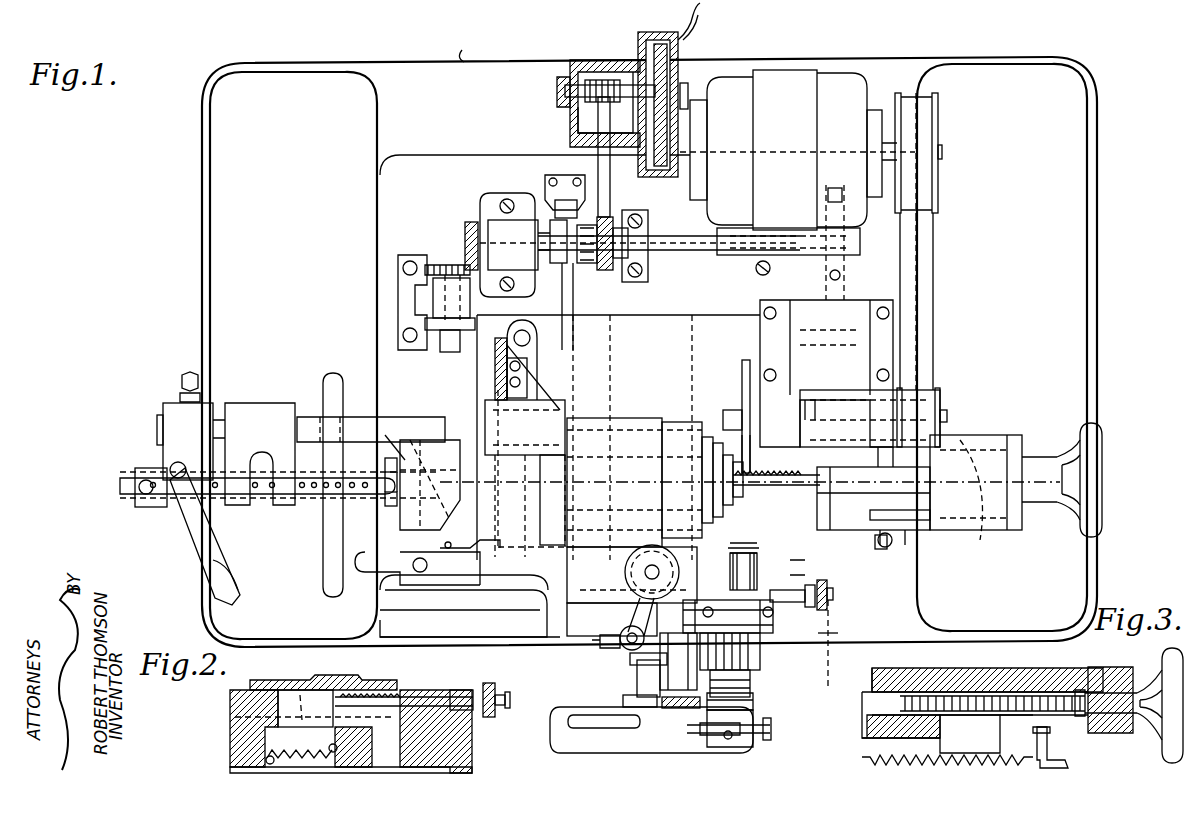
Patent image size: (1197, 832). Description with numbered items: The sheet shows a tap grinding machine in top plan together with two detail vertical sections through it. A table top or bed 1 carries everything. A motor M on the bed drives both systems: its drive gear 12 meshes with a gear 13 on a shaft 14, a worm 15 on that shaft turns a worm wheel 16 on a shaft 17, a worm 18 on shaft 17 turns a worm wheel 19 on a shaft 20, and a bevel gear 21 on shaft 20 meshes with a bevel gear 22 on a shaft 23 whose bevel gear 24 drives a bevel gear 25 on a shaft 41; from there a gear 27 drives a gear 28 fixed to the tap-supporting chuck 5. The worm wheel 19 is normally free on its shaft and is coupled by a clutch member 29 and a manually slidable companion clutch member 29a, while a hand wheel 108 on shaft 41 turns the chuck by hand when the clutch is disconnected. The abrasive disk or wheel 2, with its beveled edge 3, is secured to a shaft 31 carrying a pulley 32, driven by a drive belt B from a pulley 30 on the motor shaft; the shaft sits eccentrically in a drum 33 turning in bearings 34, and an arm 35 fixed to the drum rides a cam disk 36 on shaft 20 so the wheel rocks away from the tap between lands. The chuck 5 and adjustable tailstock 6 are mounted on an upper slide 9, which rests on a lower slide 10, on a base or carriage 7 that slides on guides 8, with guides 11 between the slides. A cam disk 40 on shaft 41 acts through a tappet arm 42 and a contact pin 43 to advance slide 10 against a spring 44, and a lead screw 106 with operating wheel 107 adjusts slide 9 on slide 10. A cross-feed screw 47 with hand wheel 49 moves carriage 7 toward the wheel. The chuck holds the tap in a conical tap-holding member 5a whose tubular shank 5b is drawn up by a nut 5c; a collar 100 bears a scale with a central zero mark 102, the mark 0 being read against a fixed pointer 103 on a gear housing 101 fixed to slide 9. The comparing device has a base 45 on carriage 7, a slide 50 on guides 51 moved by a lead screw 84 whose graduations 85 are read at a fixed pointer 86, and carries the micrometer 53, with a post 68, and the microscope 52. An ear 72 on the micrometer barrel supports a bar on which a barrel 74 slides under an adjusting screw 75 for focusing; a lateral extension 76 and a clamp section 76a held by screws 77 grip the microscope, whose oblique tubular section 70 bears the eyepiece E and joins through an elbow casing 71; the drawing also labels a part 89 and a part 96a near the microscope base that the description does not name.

In FIG. 1, the table top or bed 1 is at (778, 505).
In FIG. 3, the table top or bed 1 is at (862, 745).
In FIG. 1, the abrasive disk or wheel 2 is at (742, 372).
In FIG. 1, the beveled edge 3 is at (745, 385).
In FIG. 1, the tap-supporting chuck 5 is at (680, 425).
In FIG. 1, the conical tap-holding member 5a is at (728, 470).
In FIG. 1, the tubular shank 5b is at (385, 462).
In FIG. 1, the nut 5c is at (398, 440).
In FIG. 1, the adjustable tailstock 6 is at (873, 508).
In FIG. 1, the base or carriage 7 is at (650, 322).
In FIG. 2, the base or carriage 7 is at (240, 768).
In FIG. 3, the base or carriage 7 is at (862, 726).
In FIG. 1, the guides 8 is at (615, 328).
In FIG. 1, the upper slide 9 is at (965, 445).
In FIG. 3, the upper slide 9 is at (945, 670).
In FIG. 3, the lower slide 10 is at (895, 680).
In FIG. 1, the guides 11 is at (982, 497).
In FIG. 1, the drive gear 12 is at (663, 177).
In FIG. 1, the gear 13 is at (660, 40).
In FIG. 1, the shaft 14 is at (636, 90).
In FIG. 1, the worm 15 is at (590, 80).
In FIG. 1, the worm wheel 16 is at (578, 110).
In FIG. 1, the shaft 17 is at (598, 160).
In FIG. 1, the worm 18 is at (628, 240).
In FIG. 1, the worm wheel 19 is at (590, 265).
In FIG. 1, the shaft 20 is at (685, 245).
In FIG. 1, the bevel gear 21 is at (470, 222).
In FIG. 1, the bevel gear 22 is at (446, 263).
In FIG. 1, the shaft 23 is at (435, 352).
In FIG. 1, the bevel gear 24 is at (430, 485).
In FIG. 1, the bevel gear 25 is at (459, 544).
In FIG. 1, the gear 27 is at (497, 345).
In FIG. 1, the gear 28 is at (482, 465).
In FIG. 1, the clutch member 29 is at (590, 268).
In FIG. 1, the companion clutch member 29a is at (560, 215).
In FIG. 1, the pulley 30 is at (940, 130).
In FIG. 1, the shaft 31 is at (893, 410).
In FIG. 1, the pulley 32 is at (942, 400).
In FIG. 1, the drum 33 is at (810, 365).
In FIG. 1, the bearings 34 is at (810, 392).
In FIG. 1, the arm 35 is at (838, 330).
In FIG. 1, the cam disk 36 is at (845, 275).
In FIG. 1, the cam disk 40 is at (531, 468).
In FIG. 1, the shaft 41 is at (395, 520).
In FIG. 1, the link 42 is at (535, 372).
In FIG. 1, the tappet arm / contact pin 43 is at (550, 487).
In FIG. 3, the spring 44 is at (1070, 756).
In FIG. 2, the base 45 is at (232, 722).
In FIG. 1, the cross-feed screw 47 is at (760, 575).
In FIG. 1, the hand wheel 49 is at (560, 745).
In FIG. 1, the slide 50 is at (826, 645).
In FIG. 2, the slide 50 is at (395, 690).
In FIG. 2, the guides 51 is at (305, 706).
In FIG. 1, the microscope 52 is at (750, 680).
In FIG. 1, the micrometer 53 is at (645, 545).
In FIG. 1, the post 68 is at (620, 645).
In FIG. 1, the oblique tubular section 70 is at (753, 702).
In FIG. 1, the elbow casing 71 is at (760, 652).
In FIG. 1, the ear 72 is at (682, 555).
In FIG. 1, the barrel 74 is at (640, 710).
In FIG. 1, the adjusting screw 75 is at (680, 710).
In FIG. 1, the lateral extension 76 is at (722, 590).
In FIG. 1, the clamp section 76a is at (728, 611).
In FIG. 1, the screws 77 is at (690, 633).
In FIG. 1, the lead screw 84 is at (812, 585).
In FIG. 2, the lead screw 84 is at (452, 690).
In FIG. 1, the graduations 85 is at (817, 598).
In FIG. 2, the graduations 85 is at (505, 695).
In FIG. 1, the fixed pointer 86 is at (814, 614).
In FIG. 1, the rod 89 is at (746, 723).
In FIG. 1, the knob 96a is at (768, 738).
In FIG. 1, the collar 100 is at (440, 575).
In FIG. 1, the gear housing 101 is at (540, 580).
In FIG. 1, the central zero mark 102 is at (420, 575).
In FIG. 1, the fixed pointer 103 is at (472, 585).
In FIG. 3, the lead screw 106 is at (1005, 690).
In FIG. 1, the operating wheel 107 is at (1100, 448).
In FIG. 3, the operating wheel 107 is at (1168, 650).
In FIG. 1, the hand wheel 108 is at (330, 385).
In FIG. 1, the motor M is at (792, 80).
In FIG. 1, the drive belt B is at (935, 266).
In FIG. 1, the eye-lens or eyepiece E is at (728, 740).
In FIG. 1, the scale mark zero 0 is at (736, 495).